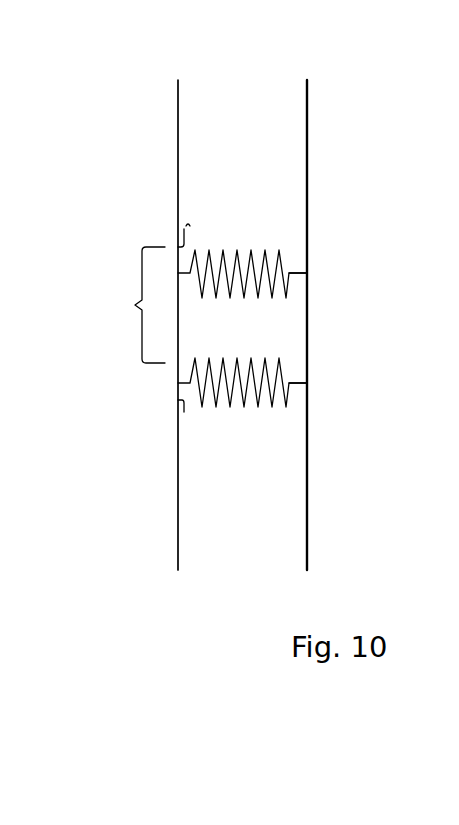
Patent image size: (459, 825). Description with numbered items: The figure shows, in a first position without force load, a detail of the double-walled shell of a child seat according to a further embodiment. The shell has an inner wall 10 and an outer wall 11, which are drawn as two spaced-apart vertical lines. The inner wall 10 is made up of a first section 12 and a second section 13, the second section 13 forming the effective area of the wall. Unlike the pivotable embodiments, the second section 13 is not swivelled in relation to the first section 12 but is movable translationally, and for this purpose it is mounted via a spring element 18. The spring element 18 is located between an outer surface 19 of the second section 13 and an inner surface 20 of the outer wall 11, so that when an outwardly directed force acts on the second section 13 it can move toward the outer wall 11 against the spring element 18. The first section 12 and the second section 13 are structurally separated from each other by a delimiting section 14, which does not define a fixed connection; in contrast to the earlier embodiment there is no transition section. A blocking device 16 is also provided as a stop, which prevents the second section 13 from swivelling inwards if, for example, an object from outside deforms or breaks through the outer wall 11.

The inner wall 10 is at (162, 452).
The outer wall 11 is at (317, 450).
The first section 12 is at (168, 153).
The second section 13 is at (135, 305).
The delimiting section 14 is at (176, 237).
The blocking device 16 is at (188, 227).
The spring element 18 is at (220, 257).
The outer surface 19 is at (185, 307).
The inner surface 20 is at (297, 318).